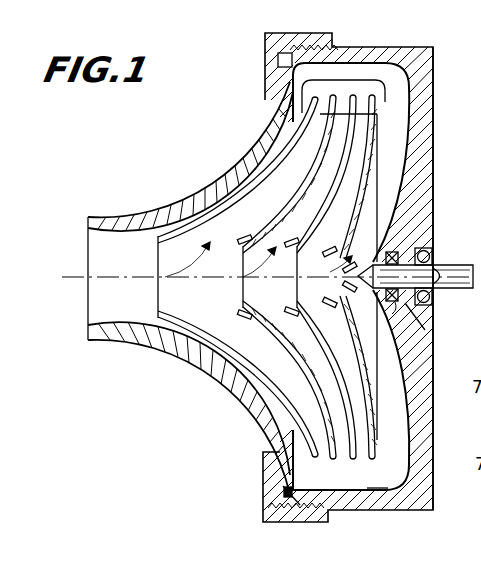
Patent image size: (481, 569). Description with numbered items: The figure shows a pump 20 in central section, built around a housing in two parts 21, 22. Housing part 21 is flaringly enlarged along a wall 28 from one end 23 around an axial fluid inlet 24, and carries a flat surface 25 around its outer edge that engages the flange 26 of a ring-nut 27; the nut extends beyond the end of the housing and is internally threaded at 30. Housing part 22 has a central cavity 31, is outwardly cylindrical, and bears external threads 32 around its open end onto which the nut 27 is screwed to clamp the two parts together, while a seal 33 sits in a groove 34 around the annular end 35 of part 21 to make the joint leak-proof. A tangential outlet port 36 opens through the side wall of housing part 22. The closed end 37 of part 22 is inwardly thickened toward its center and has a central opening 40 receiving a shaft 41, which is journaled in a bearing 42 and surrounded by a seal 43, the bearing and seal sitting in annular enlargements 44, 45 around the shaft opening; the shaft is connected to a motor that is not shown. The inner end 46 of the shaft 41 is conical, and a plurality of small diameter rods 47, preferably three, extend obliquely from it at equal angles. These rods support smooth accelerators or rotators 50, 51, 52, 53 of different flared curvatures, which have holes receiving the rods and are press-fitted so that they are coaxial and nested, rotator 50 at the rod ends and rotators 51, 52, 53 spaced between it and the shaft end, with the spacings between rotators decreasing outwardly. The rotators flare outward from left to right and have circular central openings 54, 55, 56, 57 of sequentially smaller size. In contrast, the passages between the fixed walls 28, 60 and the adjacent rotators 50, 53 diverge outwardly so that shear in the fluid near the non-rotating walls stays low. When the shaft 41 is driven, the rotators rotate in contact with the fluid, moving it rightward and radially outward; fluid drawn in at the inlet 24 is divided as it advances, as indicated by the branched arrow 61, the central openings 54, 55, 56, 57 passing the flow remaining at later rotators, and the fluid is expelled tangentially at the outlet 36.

The pump 20 is at (462, 66).
The housing part 21 is at (222, 168).
The housing part 22 is at (388, 46).
The end 23 is at (90, 217).
The fluid inlet 24 is at (88, 266).
The flat surface 25 is at (277, 73).
The flange 26 is at (263, 497).
The ring-nut 27 is at (290, 522).
The wall 28 is at (130, 216).
The internal threads 30 is at (318, 522).
The central cavity 31 is at (378, 478).
The external threads 32 is at (270, 522).
The seal 33 is at (284, 490).
The groove 34 is at (290, 58).
The annular end 35 is at (298, 509).
The tangential outlet port 36 is at (376, 89).
The closed end 37 is at (434, 162).
The opening 40 is at (436, 263).
The shaft 41 is at (433, 302).
The bearing 42 is at (430, 315).
The seal 43 is at (413, 247).
The annular enlargement 44 is at (425, 330).
The annular enlargement 45 is at (393, 300).
The inner end of shaft 46 is at (352, 268).
The rods 47 is at (292, 240).
The rotator 50 is at (238, 207).
The rotator 51 is at (238, 262).
The rotator 52 is at (330, 182).
The rotator 53 is at (380, 152).
The central opening 54 is at (152, 288).
The central opening 55 is at (240, 294).
The central opening 56 is at (296, 282).
The central opening 57 is at (343, 275).
The wall 60 is at (410, 420).
The branched arrow 61 is at (131, 279).